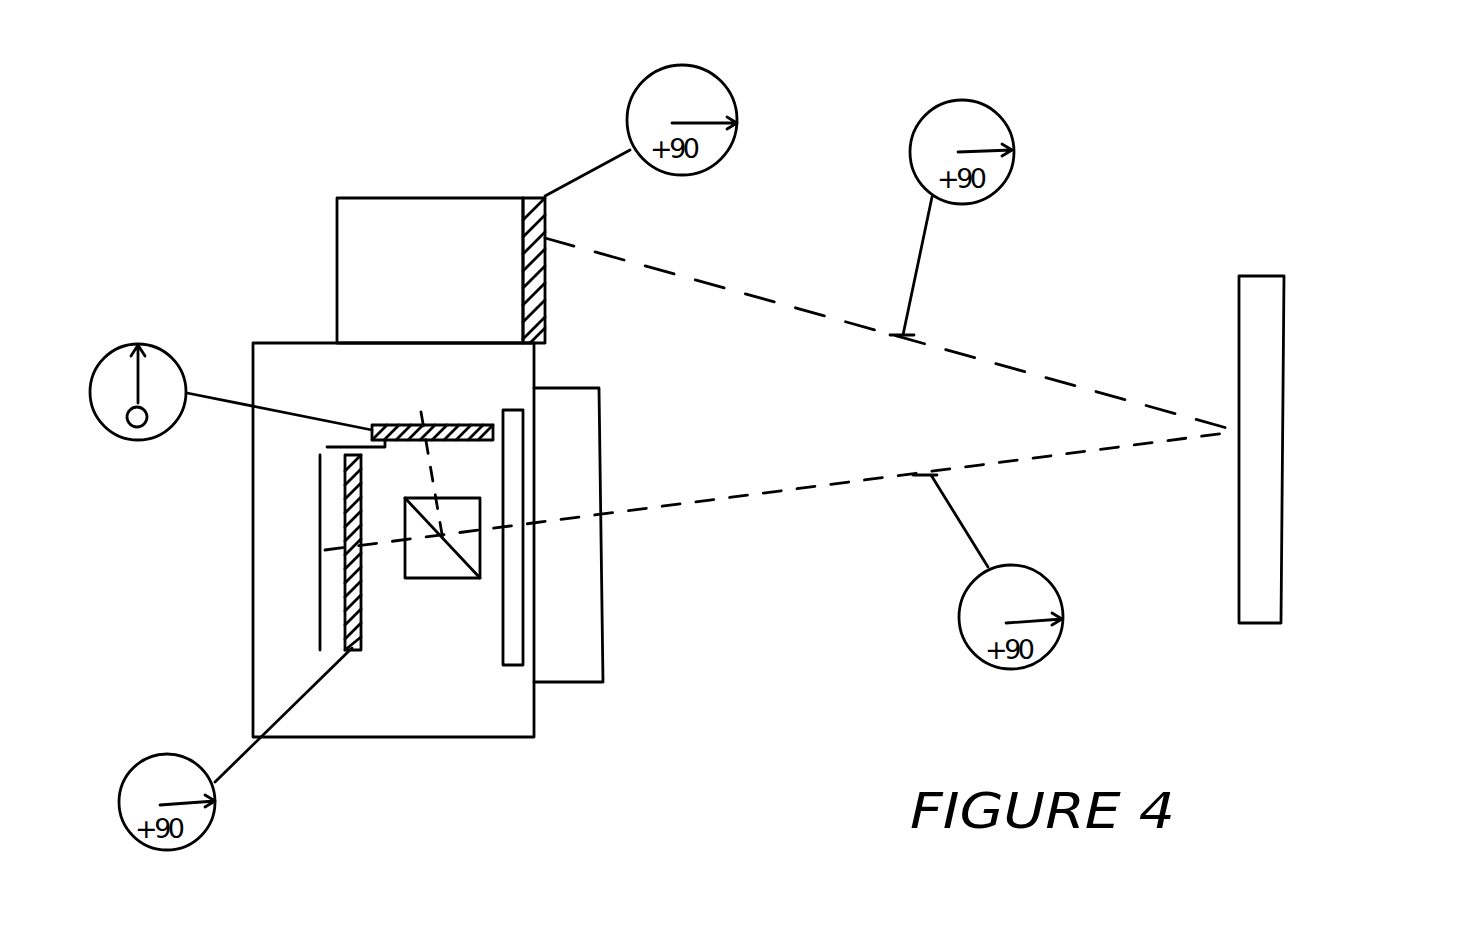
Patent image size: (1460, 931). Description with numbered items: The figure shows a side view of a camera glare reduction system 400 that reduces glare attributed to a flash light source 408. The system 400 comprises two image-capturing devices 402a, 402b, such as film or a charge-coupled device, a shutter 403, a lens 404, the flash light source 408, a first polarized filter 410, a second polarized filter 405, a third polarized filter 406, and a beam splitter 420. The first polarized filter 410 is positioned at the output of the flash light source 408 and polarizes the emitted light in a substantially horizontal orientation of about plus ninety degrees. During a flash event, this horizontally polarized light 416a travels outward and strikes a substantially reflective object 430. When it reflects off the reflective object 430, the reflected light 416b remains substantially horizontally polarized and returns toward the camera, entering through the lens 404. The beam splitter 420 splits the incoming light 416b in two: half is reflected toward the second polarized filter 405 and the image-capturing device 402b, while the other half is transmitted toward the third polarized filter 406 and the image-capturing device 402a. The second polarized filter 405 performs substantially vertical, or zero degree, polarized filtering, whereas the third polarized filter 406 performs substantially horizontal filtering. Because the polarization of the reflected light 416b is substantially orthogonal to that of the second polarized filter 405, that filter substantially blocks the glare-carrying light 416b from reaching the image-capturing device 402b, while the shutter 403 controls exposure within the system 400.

The camera glare reduction system 400 is at (400, 72).
The image-capturing device 402a is at (313, 618).
The image-capturing device 402b is at (493, 410).
The shutter 403 is at (513, 665).
The lens 404 is at (580, 660).
The second polarized filter 405 is at (327, 447).
The third polarized filter 406 is at (361, 630).
The flash light source 408 is at (388, 233).
The first polarized filter 410 is at (547, 300).
The light 416a is at (1010, 365).
The reflected light 416b is at (1103, 452).
The beam splitter 420 is at (463, 580).
The substantially reflective object 430 is at (1283, 312).